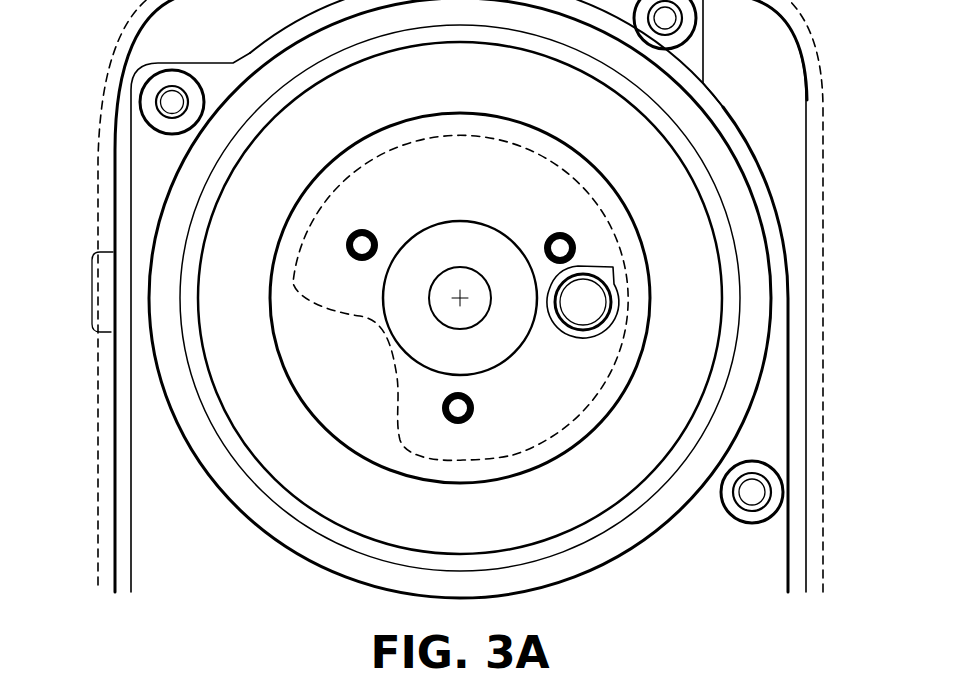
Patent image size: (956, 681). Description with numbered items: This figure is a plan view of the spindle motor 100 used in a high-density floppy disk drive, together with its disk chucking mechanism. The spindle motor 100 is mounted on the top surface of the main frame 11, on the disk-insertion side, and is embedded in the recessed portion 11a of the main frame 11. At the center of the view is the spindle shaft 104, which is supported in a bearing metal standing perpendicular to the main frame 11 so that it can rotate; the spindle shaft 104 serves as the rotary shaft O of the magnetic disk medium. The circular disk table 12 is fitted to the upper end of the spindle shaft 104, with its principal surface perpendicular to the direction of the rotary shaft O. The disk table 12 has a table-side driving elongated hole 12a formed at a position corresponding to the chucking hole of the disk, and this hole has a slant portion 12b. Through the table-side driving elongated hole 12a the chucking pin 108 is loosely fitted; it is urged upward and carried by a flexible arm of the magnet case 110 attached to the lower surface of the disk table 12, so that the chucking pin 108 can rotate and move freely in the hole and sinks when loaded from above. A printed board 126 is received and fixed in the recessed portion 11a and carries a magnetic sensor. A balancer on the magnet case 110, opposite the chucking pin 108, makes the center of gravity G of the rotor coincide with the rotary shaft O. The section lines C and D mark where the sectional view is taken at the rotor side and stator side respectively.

The main frame 11 is at (812, 492).
The recessed portion 11a is at (768, 108).
The disk table 12 is at (578, 428).
The table-side driving elongated hole 12a is at (612, 268).
The slant portion 12b is at (562, 270).
The spindle motor 100 is at (241, 522).
The spindle shaft 104 is at (472, 314).
The chucking pin 108 is at (597, 320).
The magnet case 110 is at (657, 518).
The printed board 126 is at (688, 52).
The center of gravity G is at (461, 296).
The rotary shaft O is at (476, 309).
The line C— C is at (81, 293).
The line D— D is at (752, 143).